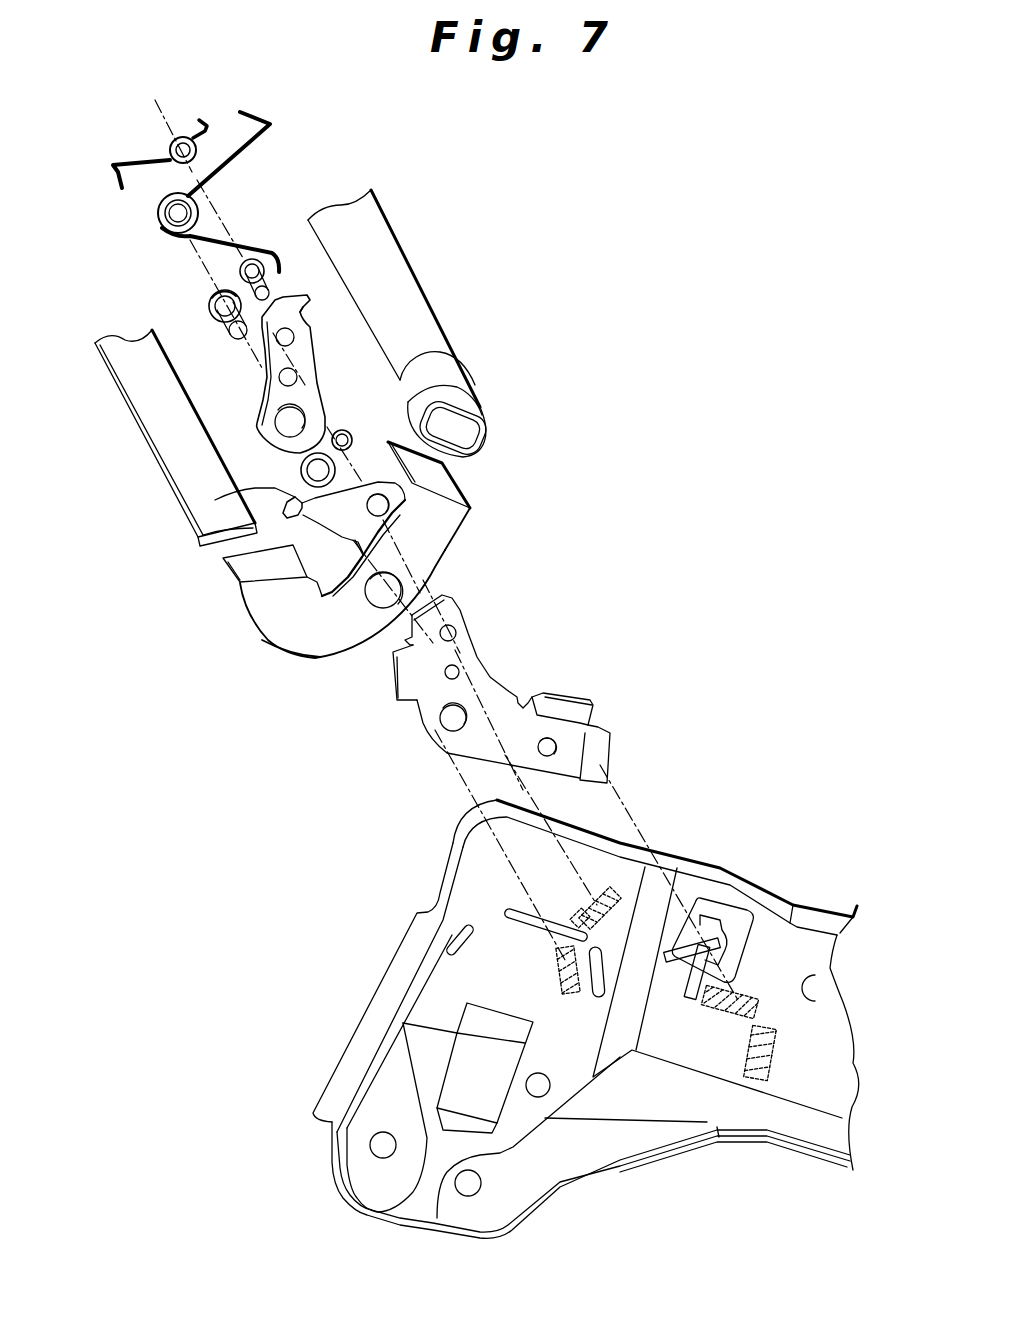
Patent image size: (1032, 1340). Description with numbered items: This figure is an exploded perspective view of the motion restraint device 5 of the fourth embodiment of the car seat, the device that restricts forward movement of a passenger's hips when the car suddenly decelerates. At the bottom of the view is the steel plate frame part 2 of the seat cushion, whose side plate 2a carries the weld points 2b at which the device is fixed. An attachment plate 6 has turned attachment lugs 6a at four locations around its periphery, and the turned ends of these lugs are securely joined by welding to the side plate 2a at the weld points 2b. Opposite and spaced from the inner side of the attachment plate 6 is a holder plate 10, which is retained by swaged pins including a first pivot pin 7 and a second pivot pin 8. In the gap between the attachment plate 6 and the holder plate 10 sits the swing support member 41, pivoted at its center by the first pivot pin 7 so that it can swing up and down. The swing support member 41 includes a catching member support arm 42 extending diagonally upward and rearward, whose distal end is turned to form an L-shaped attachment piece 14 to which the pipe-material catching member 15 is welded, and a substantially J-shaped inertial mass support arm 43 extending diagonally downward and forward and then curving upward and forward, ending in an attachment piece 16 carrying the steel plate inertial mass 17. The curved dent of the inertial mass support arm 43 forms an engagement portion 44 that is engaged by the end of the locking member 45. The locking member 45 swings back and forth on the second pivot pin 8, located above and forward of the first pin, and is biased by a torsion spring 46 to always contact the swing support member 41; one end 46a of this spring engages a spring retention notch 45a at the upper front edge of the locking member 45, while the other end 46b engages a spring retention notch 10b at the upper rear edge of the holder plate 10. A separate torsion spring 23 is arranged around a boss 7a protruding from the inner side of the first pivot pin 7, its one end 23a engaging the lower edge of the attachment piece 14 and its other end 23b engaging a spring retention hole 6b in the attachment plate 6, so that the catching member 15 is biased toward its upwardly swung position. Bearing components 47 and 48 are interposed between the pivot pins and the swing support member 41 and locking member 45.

The frame part 2 is at (596, 1032).
The side plate 2a is at (437, 990).
The weld points 2b is at (583, 900).
The motion restraint device 5 is at (557, 512).
The attachment plate 6 is at (499, 706).
The attachment lugs 6a is at (403, 670).
The spring retention hole 6b is at (548, 756).
The first pivot pin 7 is at (193, 294).
The boss 7a is at (210, 290).
The second pivot pin 8 is at (267, 281).
The holder plate 10 is at (290, 374).
The spring retention notch 10b is at (308, 315).
The attachment piece 14 is at (440, 475).
The catching member 15 is at (387, 265).
The attachment piece 16 is at (247, 570).
The inertial mass 17 is at (170, 440).
The torsion spring 23 is at (200, 161).
The one end of torsion spring 23a is at (240, 112).
The other end of torsion spring 23b is at (283, 240).
The swing support member 41 is at (318, 579).
The catching member support arm 42 is at (433, 537).
The inertial mass support arm 43 is at (317, 637).
The engagement portion 44 is at (258, 627).
The locking member 45 is at (252, 514).
The spring retention notch 45a is at (283, 507).
The torsion spring 46 is at (149, 119).
The one end of torsion spring 46a is at (112, 167).
The other end of torsion spring 46b is at (200, 120).
The bearing component 47 is at (300, 470).
The bearing component 48 is at (340, 430).